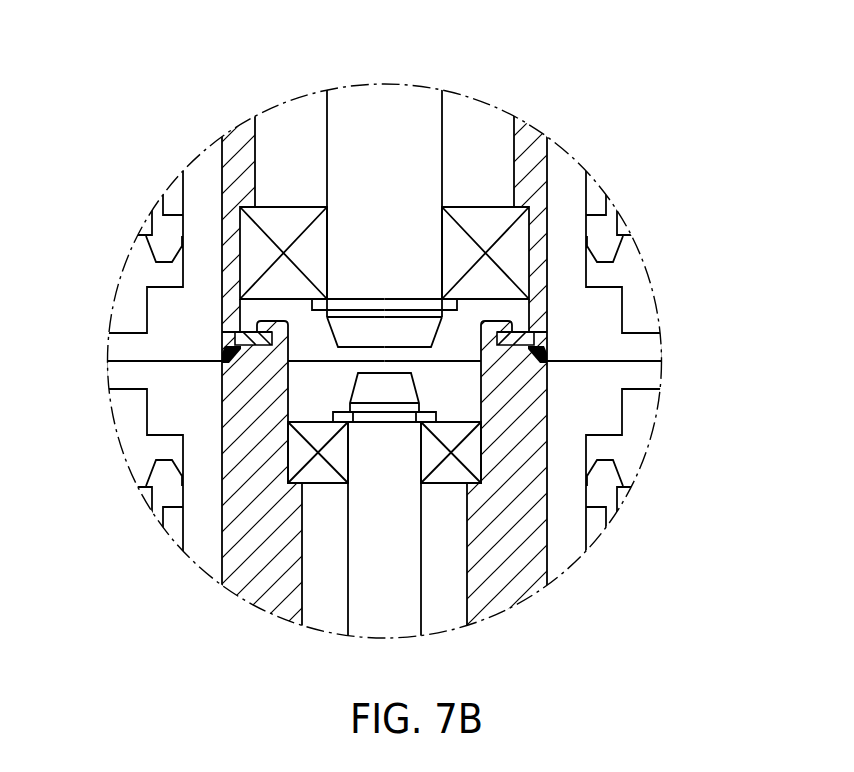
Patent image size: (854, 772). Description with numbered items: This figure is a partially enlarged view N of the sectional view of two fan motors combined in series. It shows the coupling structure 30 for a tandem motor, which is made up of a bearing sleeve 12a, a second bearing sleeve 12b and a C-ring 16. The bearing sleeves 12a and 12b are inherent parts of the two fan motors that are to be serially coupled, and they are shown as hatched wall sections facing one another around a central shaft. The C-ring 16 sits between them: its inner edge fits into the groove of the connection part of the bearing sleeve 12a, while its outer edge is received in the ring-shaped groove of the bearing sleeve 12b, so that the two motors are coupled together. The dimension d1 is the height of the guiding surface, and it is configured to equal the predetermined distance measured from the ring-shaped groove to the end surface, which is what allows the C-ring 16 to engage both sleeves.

The bearing sleeve 12a is at (538, 462).
The bearing sleeve 12b is at (537, 227).
The C-ring 16 is at (533, 323).
The coupling structure 30 is at (750, 158).
The partially enlarged view N is at (493, 102).
The height of the guiding surface d1 is at (70, 390).